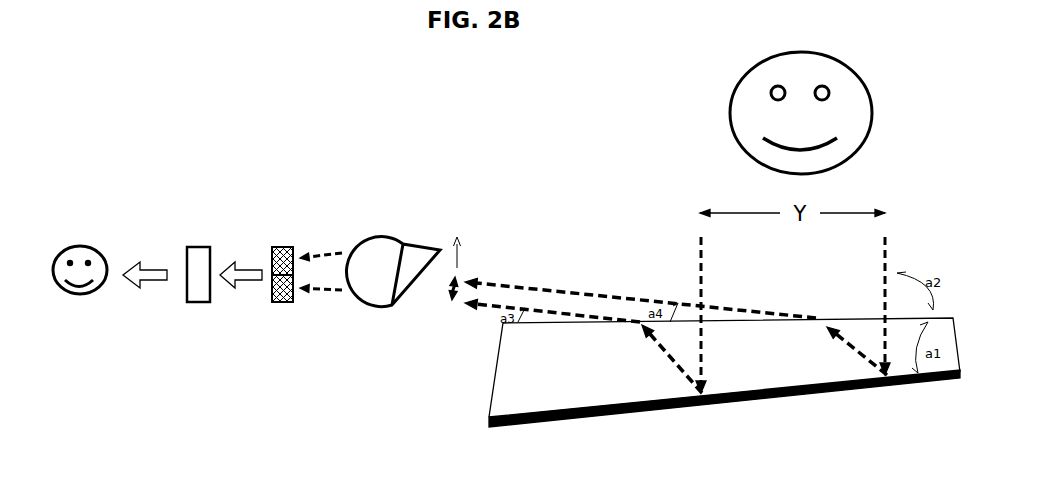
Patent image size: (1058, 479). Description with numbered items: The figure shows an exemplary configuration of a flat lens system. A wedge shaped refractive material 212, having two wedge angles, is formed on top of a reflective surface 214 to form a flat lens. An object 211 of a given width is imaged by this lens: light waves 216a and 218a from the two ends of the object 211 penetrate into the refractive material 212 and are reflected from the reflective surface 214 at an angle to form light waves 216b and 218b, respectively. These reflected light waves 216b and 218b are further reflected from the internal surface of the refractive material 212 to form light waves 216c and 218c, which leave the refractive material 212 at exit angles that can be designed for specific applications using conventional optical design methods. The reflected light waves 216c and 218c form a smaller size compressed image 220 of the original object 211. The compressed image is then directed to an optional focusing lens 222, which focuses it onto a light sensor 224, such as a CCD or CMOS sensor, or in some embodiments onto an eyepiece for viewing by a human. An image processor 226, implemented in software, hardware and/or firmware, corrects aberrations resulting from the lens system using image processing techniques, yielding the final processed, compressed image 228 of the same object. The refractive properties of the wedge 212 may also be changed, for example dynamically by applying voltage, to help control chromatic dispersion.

The object 211 is at (801, 108).
The wedge shaped refractive material 212 is at (495, 362).
The reflective surface 214 is at (483, 418).
The light wave 216a is at (864, 306).
The light wave 216b is at (831, 351).
The light wave 216c is at (640, 285).
The light wave 218a is at (673, 315).
The light wave 218b is at (651, 359).
The light wave 218c is at (540, 317).
The compressed image 220 is at (455, 247).
The focusing lens 222 is at (393, 259).
The light sensor 224 is at (271, 252).
The image processor 226 is at (187, 256).
The compressed image 228 is at (74, 250).